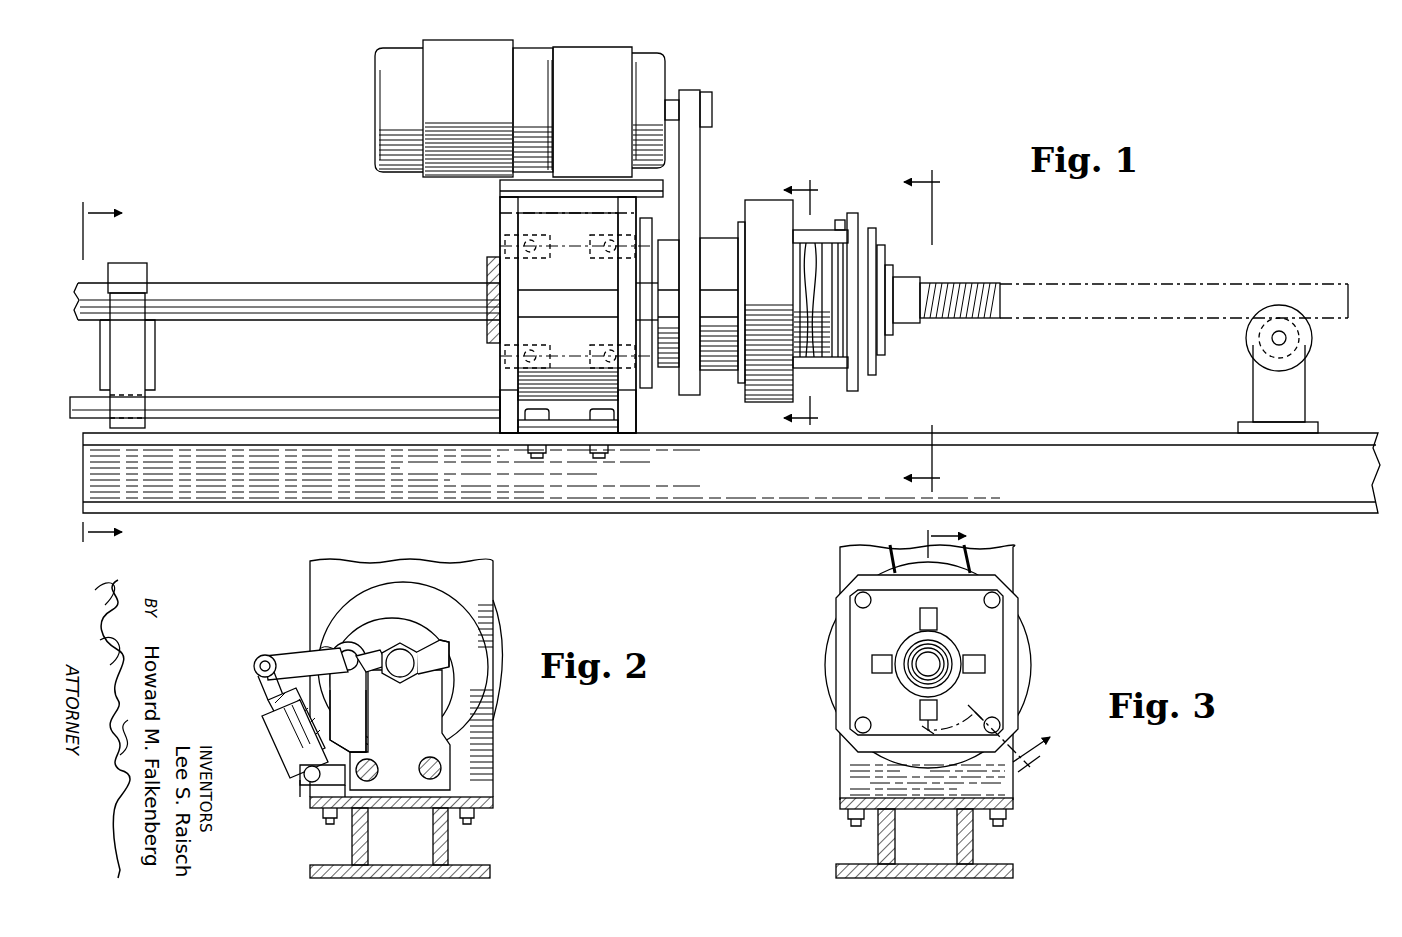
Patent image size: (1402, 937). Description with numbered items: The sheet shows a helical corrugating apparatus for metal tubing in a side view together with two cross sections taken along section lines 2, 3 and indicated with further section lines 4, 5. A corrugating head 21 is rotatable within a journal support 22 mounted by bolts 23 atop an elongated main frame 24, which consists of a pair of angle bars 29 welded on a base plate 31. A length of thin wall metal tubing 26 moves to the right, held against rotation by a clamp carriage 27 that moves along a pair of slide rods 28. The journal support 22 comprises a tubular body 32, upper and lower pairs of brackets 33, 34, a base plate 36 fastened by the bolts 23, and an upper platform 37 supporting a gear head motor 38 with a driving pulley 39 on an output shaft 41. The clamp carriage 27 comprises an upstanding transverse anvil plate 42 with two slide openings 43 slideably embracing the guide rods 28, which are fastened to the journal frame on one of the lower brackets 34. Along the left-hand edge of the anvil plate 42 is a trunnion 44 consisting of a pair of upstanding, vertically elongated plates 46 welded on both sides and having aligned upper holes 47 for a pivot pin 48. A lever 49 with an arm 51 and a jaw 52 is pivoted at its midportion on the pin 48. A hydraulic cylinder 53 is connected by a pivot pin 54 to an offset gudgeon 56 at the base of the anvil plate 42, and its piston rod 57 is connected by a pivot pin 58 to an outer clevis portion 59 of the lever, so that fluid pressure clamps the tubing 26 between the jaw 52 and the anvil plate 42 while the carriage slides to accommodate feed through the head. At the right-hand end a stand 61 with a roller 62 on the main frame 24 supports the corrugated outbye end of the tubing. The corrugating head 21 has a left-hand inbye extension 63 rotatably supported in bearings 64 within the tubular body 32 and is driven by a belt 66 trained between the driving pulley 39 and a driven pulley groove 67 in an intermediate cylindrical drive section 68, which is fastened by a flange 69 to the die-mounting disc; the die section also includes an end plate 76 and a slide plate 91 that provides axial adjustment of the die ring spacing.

In FIG. 1, the corrugating head 21 is at (830, 214).
In FIG. 1, the journal support 22 is at (488, 258).
In FIG. 1, the bolts 23 is at (605, 457).
In FIG. 1, the main frame 24 is at (1093, 432).
In FIG. 2, the main frame 24 is at (490, 815).
In FIG. 3, the main frame 24 is at (832, 800).
In FIG. 1, the metal tubing 26 is at (268, 283).
In FIG. 2, the metal tubing 26 is at (420, 668).
In FIG. 3, the metal tubing 26 is at (908, 681).
In FIG. 1, the clamp carriage 27 is at (150, 261).
In FIG. 2, the clamp carriage 27 is at (452, 650).
In FIG. 1, the slide rods 28 is at (410, 400).
In FIG. 2, the slide rods 28 is at (430, 757).
In FIG. 1, the angle bars 29 is at (1266, 485).
In FIG. 2, the angle bars 29 is at (352, 838).
In FIG. 3, the angle bars 29 is at (878, 836).
In FIG. 1, the base plate 31 is at (1133, 513).
In FIG. 2, the base plate 31 is at (315, 870).
In FIG. 3, the base plate 31 is at (840, 868).
In FIG. 1, the tubular body 32 is at (572, 312).
In FIG. 1, the upper brackets 33 is at (504, 214).
In FIG. 2, the upper brackets 33 is at (493, 578).
In FIG. 1, the lower brackets 34 is at (505, 398).
In FIG. 2, the lower brackets 34 is at (480, 728).
In FIG. 1, the base plate 36 is at (573, 428).
In FIG. 1, the upper platform 37 is at (500, 190).
In FIG. 1, the gear head motor 38 is at (521, 45).
In FIG. 1, the driving pulley 39 is at (708, 93).
In FIG. 1, the output shaft 41 is at (672, 99).
In FIG. 2, the anvil plate 42 is at (404, 723).
In FIG. 2, the slide openings 43 is at (368, 758).
In FIG. 2, the trunnion 44 is at (366, 695).
In FIG. 2, the vertically elongated plates 46 is at (357, 739).
In FIG. 2, the upper holes 47 is at (348, 649).
In FIG. 2, the pivot pin 48 is at (362, 652).
In FIG. 2, the lever 49 is at (362, 628).
In FIG. 2, the arm 51 is at (298, 650).
In FIG. 2, the jaw 52 is at (428, 638).
In FIG. 2, the hydraulic cylinder 53 is at (270, 742).
In FIG. 2, the pivot pin 54 is at (303, 776).
In FIG. 2, the offset gudgeon 56 is at (322, 786).
In FIG. 2, the piston rod 57 is at (270, 700).
In FIG. 2, the pivot pin 58 is at (254, 666).
In FIG. 2, the clevis portion 59 is at (268, 657).
In FIG. 1, the stand 61 is at (1253, 398).
In FIG. 1, the roller 62 is at (1312, 338).
In FIG. 1, the inbye extension 63 is at (488, 336).
In FIG. 1, the bearings 64 is at (536, 258).
In FIG. 1, the belt 66 is at (700, 163).
In FIG. 1, the driven pulley groove 67 is at (686, 258).
In FIG. 1, the intermediate cylindrical drive section 68 is at (731, 292).
In FIG. 1, the flange 69 is at (744, 218).
In FIG. 3, the end plate 76 is at (876, 633).
In FIG. 3, the slide plate 91 is at (840, 609).
In FIG. 1, the section line 2 is at (109, 373).
In FIG. 1, the section line 3 is at (909, 329).
In FIG. 3, the section line 4 is at (990, 648).
In FIG. 1, the section line 5 is at (791, 298).